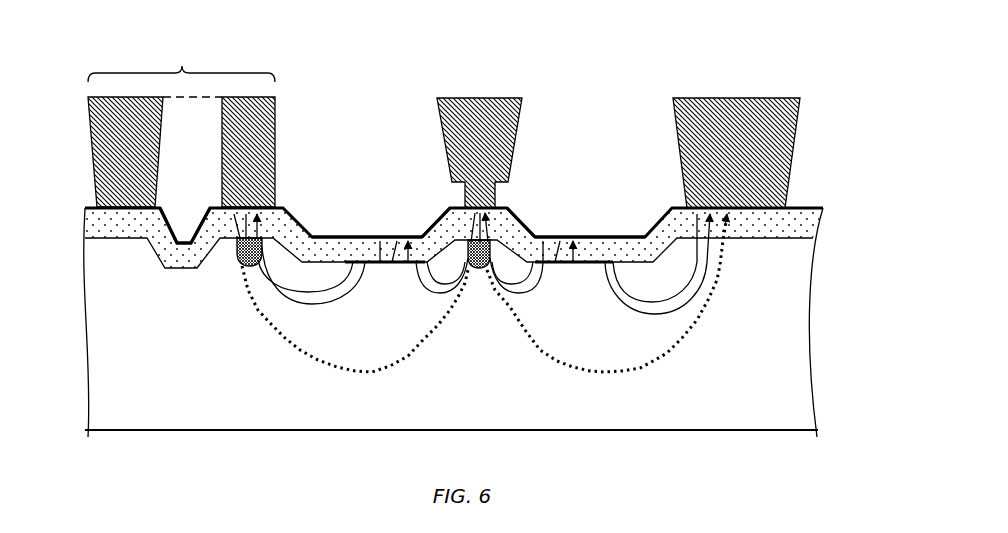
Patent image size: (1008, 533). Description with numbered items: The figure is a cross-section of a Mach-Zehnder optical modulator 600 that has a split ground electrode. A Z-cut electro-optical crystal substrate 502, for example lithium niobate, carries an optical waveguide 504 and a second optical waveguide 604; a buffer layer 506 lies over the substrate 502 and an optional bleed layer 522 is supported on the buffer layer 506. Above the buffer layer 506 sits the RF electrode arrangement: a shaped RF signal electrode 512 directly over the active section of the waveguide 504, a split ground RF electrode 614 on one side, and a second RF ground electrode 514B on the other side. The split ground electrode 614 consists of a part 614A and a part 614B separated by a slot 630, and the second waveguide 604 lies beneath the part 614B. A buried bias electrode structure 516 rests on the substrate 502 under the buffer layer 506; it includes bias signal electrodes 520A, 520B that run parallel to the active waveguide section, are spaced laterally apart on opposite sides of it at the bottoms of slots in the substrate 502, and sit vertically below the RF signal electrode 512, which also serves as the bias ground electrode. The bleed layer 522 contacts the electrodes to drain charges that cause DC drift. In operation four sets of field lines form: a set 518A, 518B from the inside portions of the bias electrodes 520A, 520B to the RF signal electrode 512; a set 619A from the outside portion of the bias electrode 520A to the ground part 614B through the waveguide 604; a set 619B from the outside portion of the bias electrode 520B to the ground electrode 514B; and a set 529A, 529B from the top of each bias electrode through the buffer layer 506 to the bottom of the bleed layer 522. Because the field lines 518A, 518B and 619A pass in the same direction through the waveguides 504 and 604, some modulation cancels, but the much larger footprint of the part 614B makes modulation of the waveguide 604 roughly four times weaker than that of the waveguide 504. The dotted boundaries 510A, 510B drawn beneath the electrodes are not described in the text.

The optical modulator 600 is at (483, 228).
The electro-optical crystal substrate 502 is at (453, 322).
The buffer layer 506 is at (805, 218).
The bleed layer 522 is at (805, 207).
The slot 630 is at (184, 226).
The bias signal electrode 520A is at (366, 237).
The bias signal electrode 520B is at (592, 237).
The electric field lines 529A is at (408, 237).
The electric field lines 529B is at (547, 237).
The buried bias electrode structure 516 is at (381, 284).
The split ground RF electrode 614 is at (220, 125).
The part of the split ground electrode 614A is at (153, 155).
The part of the split ground electrode 614B is at (263, 127).
The RF signal electrode 512 is at (479, 153).
The RF ground electrode 514B is at (736, 153).
The optical waveguide 604 is at (236, 280).
The optical waveguide 504 is at (485, 299).
The electric field lines 619A is at (310, 298).
The electric field lines 619B is at (697, 292).
The electric field lines 518A is at (436, 292).
The electric field lines 518B is at (528, 292).
The first depletion boundary 510A is at (300, 349).
The second depletion boundary 510B is at (668, 351).